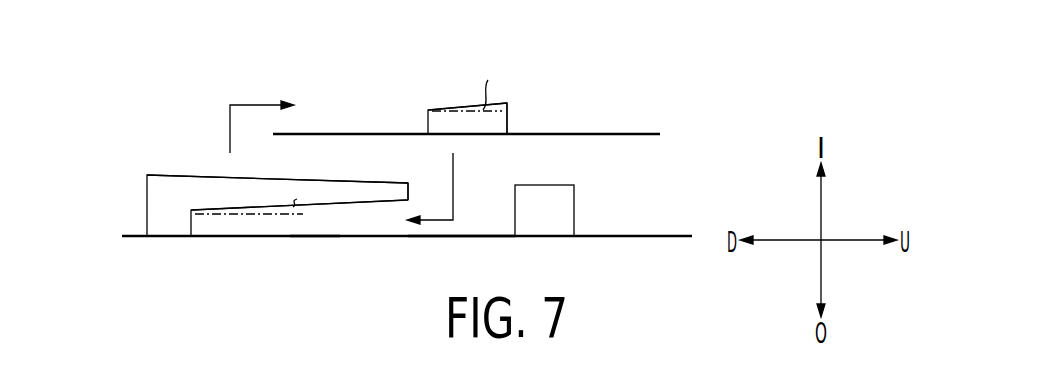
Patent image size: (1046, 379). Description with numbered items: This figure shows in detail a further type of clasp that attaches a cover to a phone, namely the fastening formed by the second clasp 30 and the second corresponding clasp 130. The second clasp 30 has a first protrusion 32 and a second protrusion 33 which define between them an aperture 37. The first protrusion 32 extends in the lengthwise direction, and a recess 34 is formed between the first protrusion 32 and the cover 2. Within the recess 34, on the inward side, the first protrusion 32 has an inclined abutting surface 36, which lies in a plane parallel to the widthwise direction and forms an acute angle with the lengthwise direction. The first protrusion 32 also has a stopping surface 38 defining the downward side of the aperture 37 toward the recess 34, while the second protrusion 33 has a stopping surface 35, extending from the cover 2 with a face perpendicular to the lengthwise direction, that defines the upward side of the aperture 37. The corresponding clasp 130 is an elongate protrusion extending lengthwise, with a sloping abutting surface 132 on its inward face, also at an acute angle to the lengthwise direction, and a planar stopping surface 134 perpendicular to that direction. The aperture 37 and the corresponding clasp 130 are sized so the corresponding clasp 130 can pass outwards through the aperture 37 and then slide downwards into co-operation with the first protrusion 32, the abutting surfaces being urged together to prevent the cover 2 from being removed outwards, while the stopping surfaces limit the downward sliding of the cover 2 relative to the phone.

The cover 2 is at (321, 280).
The second clasp 30 is at (260, 191).
The first protrusion 32 is at (222, 190).
The second protrusion 33 is at (544, 210).
The recess 34 is at (378, 222).
The stopping surface 35 is at (515, 202).
The inclined abutting surface 36 is at (320, 207).
The aperture 37 is at (487, 218).
The stopping surface 38 is at (412, 193).
The second corresponding clasp 130 is at (495, 96).
The sloping abutting surface 132 is at (440, 110).
The stopping surface 134 is at (507, 122).